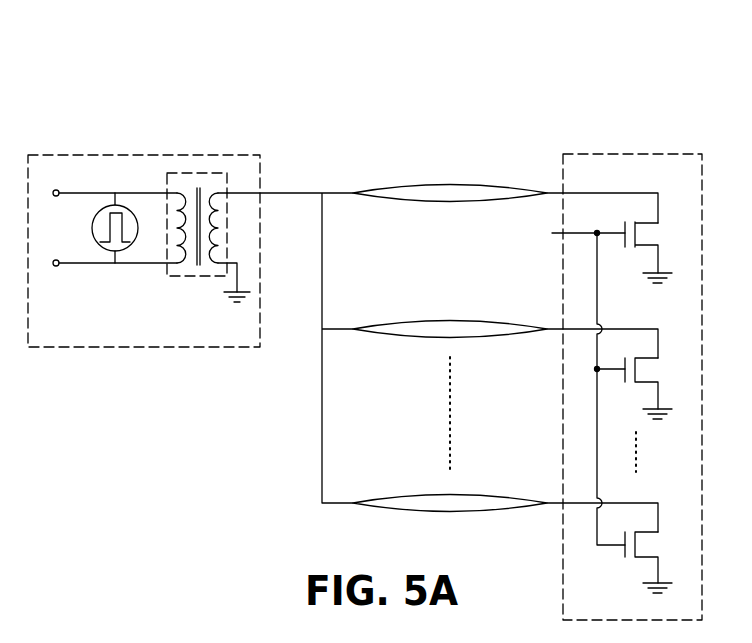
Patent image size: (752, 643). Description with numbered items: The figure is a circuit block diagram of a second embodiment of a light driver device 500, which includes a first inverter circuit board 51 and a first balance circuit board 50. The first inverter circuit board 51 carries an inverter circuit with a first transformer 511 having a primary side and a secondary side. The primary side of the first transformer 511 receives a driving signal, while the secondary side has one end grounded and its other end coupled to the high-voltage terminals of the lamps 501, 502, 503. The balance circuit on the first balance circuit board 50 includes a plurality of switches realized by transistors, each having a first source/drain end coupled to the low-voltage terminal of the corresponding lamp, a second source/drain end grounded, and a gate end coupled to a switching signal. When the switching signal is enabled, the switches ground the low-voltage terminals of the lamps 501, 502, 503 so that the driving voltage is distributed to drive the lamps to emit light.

The light driver device 500 is at (433, 58).
The first inverter circuit board 51 is at (118, 155).
The first balance circuit board 50 is at (630, 152).
The first transformer 511 is at (202, 278).
The lamp 501 is at (466, 185).
The lamp 502 is at (466, 321).
The lamp 503 is at (466, 496).